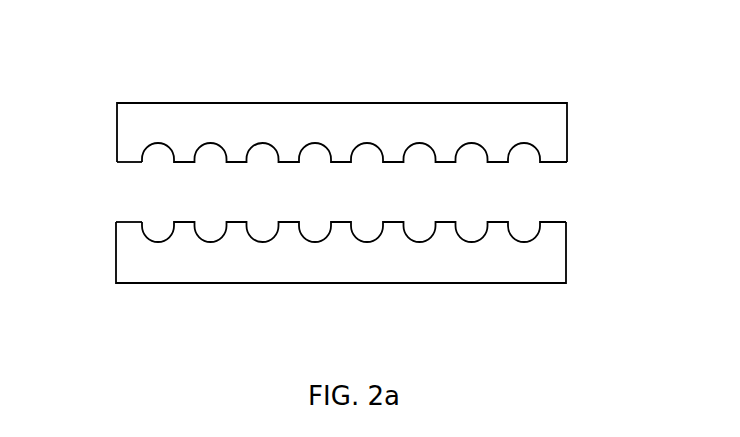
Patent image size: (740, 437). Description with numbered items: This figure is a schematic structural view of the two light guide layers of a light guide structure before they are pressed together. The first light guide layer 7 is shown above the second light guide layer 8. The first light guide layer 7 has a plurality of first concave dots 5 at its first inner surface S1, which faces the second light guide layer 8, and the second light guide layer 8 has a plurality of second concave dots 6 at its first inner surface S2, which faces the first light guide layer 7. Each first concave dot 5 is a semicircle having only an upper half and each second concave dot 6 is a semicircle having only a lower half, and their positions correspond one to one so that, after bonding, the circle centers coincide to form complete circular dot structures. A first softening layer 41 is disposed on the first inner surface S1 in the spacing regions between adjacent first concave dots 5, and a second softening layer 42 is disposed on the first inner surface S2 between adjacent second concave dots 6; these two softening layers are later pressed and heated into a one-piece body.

The first concave dots 5 is at (150, 146).
The second concave dots 6 is at (157, 241).
The first light guide layer 7 is at (313, 109).
The second light guide layer 8 is at (319, 269).
The first softening layer 41 is at (130, 164).
The second softening layer 42 is at (128, 221).
The first inner surface S1 is at (533, 165).
The first inner surface S2 is at (530, 218).